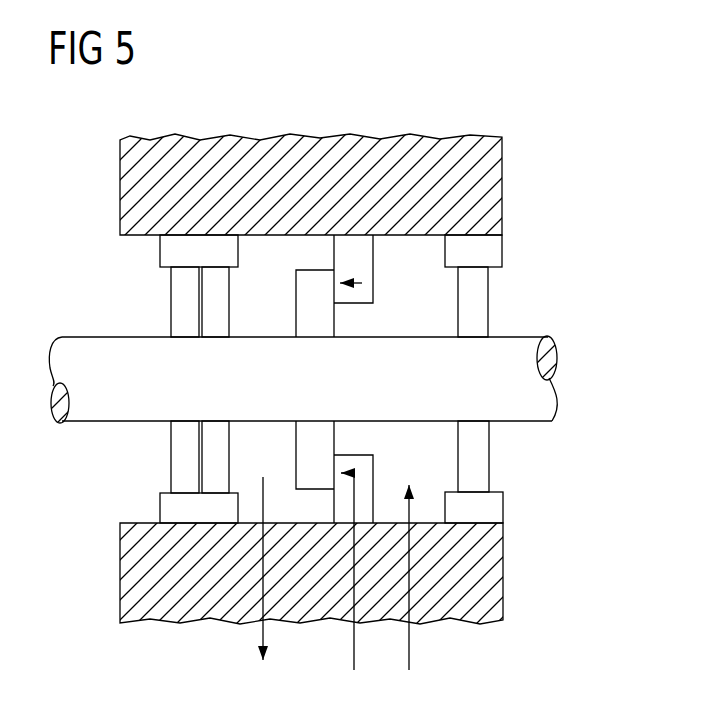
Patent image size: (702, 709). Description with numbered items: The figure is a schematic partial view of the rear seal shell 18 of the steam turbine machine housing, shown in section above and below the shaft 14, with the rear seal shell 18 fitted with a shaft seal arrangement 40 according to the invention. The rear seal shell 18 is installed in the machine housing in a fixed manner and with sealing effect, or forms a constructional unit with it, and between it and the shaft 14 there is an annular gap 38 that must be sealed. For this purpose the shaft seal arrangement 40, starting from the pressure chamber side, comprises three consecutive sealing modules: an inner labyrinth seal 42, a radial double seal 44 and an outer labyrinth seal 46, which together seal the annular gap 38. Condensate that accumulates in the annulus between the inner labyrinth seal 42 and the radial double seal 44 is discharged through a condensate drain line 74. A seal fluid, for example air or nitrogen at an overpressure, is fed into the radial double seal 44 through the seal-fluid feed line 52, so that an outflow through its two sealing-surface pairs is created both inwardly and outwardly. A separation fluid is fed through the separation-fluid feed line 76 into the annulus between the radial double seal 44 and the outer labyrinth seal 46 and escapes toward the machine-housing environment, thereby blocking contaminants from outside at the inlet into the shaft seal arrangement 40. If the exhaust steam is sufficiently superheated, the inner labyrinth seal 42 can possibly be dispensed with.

The shaft 14 is at (543, 397).
The rear seal shell 18 is at (507, 107).
The annular gap 38 is at (513, 461).
The shaft seal arrangement 40 is at (146, 263).
The inner labyrinth seal 42 is at (175, 310).
The radial double seal 44 is at (308, 449).
The outer labyrinth seal 46 is at (478, 300).
The seal-fluid feed line 52 is at (348, 638).
The condensate drain line 74 is at (258, 637).
The separation-fluid feed line 76 is at (412, 640).